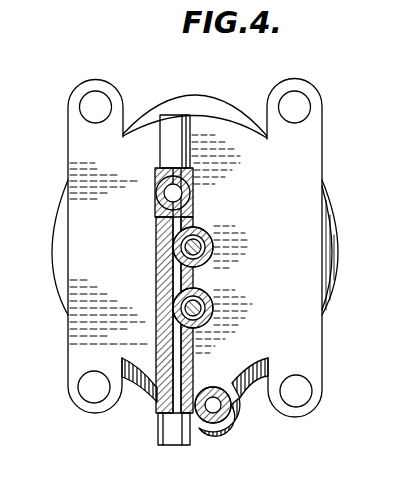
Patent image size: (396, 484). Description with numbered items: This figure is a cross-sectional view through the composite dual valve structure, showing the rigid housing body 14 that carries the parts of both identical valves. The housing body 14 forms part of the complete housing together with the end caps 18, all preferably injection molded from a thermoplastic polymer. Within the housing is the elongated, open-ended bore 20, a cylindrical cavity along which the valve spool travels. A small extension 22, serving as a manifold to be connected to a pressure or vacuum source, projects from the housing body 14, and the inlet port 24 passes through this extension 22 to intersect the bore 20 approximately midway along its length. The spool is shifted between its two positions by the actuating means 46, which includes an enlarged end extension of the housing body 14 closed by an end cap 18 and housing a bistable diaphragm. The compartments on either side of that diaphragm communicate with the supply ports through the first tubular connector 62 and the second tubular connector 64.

The housing body 14 is at (232, 317).
The end cap 18 is at (163, 100).
The bore 20 is at (213, 232).
The extension 22 is at (156, 403).
The inlet port 24 is at (156, 340).
The actuating means 46 is at (320, 188).
The first tubular connector 62 is at (157, 208).
The second tubular connector 64 is at (235, 415).